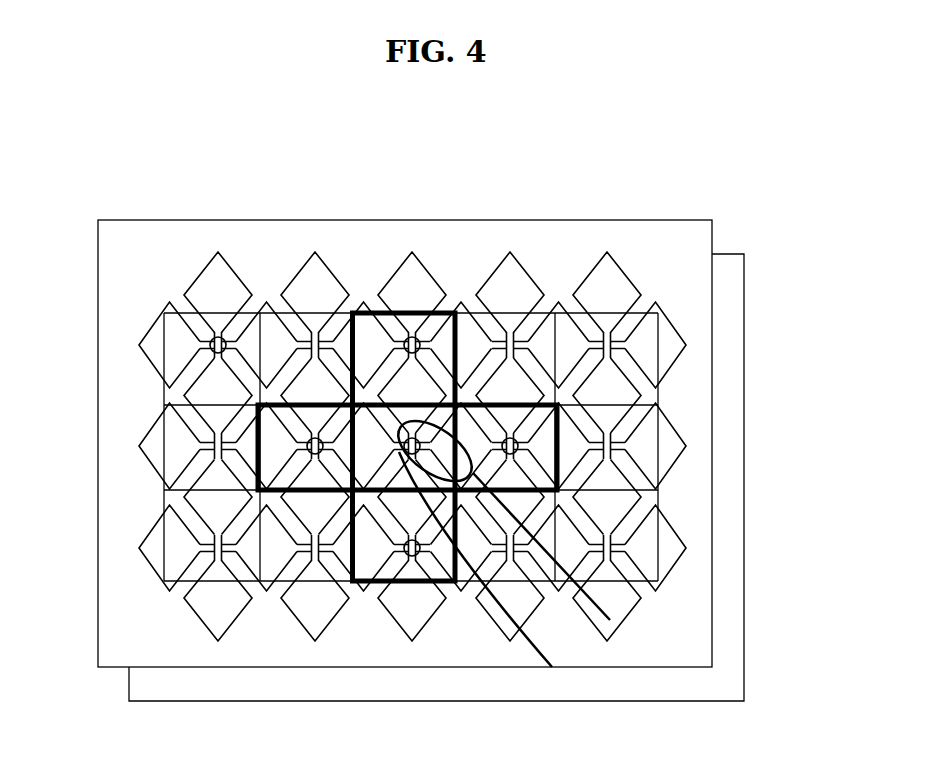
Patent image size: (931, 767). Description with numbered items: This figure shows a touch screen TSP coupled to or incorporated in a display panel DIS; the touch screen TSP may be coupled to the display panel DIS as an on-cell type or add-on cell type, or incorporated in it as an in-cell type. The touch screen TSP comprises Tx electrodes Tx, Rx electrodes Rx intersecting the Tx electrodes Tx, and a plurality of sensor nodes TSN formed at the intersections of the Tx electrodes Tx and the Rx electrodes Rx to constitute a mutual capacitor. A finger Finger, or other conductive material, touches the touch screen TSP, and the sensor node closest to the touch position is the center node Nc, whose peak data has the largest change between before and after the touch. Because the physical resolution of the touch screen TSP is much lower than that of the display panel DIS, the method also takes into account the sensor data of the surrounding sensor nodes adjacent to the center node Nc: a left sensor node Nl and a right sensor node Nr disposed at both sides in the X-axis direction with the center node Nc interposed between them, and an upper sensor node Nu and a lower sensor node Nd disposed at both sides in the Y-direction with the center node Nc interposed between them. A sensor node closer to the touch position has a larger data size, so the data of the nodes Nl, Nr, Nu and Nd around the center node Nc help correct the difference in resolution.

The touch screen TSP is at (657, 221).
The display panel DIS is at (744, 298).
The sensor node TSN is at (209, 338).
The Rx electrode Rx is at (219, 272).
The Tx electrode Tx is at (152, 344).
The upper sensor node Nu is at (412, 337).
The left sensor node Nl is at (307, 445).
The center node Nc is at (405, 455).
The right sensor node Nr is at (518, 446).
The lower sensor node Nd is at (414, 558).
The finger Finger is at (541, 648).